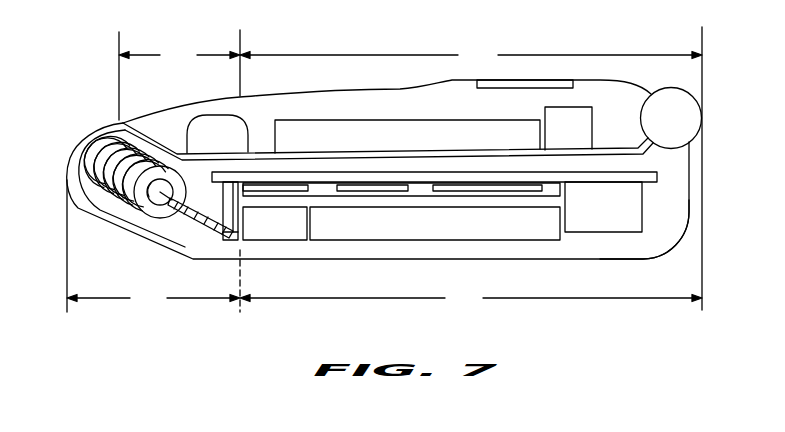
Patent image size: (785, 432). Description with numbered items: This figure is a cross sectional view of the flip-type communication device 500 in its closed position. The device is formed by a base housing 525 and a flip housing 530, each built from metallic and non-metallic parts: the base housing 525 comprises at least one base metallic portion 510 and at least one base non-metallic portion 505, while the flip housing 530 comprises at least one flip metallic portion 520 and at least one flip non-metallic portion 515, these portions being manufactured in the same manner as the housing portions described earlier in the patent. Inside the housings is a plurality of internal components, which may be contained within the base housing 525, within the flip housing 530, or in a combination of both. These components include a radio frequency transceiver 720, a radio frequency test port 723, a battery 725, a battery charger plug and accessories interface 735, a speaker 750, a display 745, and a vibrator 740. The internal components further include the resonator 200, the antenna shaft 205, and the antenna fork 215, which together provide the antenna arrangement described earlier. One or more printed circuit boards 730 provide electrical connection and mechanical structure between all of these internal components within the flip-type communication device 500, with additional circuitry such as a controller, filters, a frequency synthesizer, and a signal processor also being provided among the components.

The resonator 200 is at (93, 162).
The antenna shaft 205 is at (193, 222).
The antenna fork 215 is at (233, 215).
The flip-type communication device 500 is at (215, 342).
The base non-metallic portion 505 is at (153, 246).
The base metallic portion 510 is at (471, 298).
The flip non-metallic portion 515 is at (179, 75).
The flip metallic portion 520 is at (471, 168).
The base housing 525 is at (670, 220).
The flip housing 530 is at (413, 94).
The radio frequency (RF) transceiver 720 is at (312, 192).
The radio frequency (RF) test port 723 is at (297, 230).
The battery 725 is at (527, 230).
The printed circuit board 730 is at (655, 177).
The battery charger plug and accessories interface 735 is at (617, 227).
The vibrator 740 is at (587, 108).
The display 745 is at (318, 127).
The speaker 750 is at (217, 130).